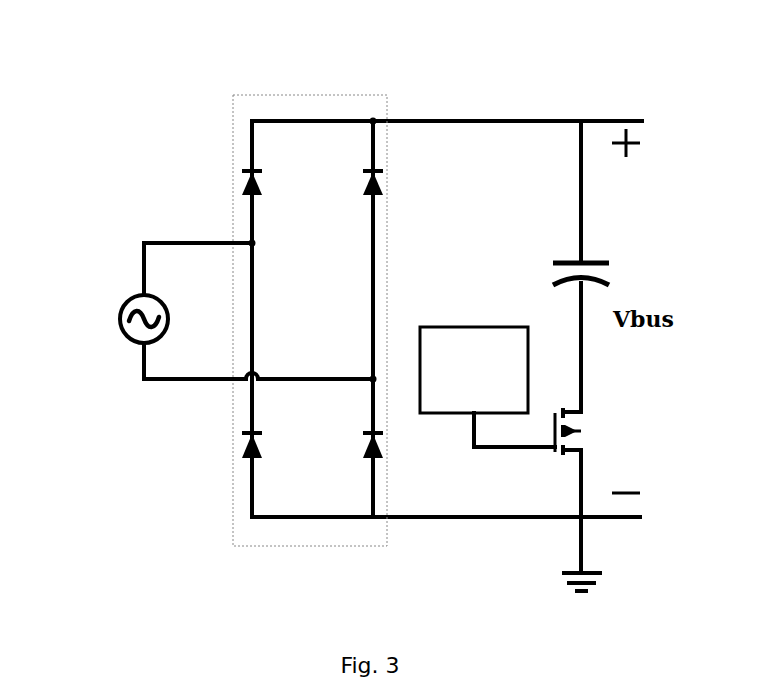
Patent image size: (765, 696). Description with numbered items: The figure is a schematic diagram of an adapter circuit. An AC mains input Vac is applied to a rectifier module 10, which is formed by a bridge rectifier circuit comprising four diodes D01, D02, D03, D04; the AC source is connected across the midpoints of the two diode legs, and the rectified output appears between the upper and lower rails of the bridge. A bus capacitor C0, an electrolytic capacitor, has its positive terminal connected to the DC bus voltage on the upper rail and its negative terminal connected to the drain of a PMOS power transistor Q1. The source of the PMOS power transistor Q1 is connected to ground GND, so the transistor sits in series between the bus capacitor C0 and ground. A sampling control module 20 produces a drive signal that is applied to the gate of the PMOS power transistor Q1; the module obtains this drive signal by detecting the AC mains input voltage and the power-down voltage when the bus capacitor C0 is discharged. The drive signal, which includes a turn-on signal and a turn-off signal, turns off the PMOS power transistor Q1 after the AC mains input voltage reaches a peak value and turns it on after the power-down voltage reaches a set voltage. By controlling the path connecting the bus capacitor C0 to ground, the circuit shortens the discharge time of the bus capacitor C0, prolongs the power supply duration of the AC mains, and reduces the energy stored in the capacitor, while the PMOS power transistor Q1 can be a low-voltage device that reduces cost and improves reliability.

The rectifier module 10 is at (300, 99).
The sampling control module 20 is at (428, 331).
The diode D01 is at (279, 184).
The diode D02 is at (401, 184).
The diode D03 is at (279, 447).
The diode D04 is at (401, 447).
The AC mains input Vac is at (219, 311).
The bus capacitor C0 is at (561, 272).
The PMOS power transistor Q1 is at (589, 431).
The ground GND is at (578, 600).